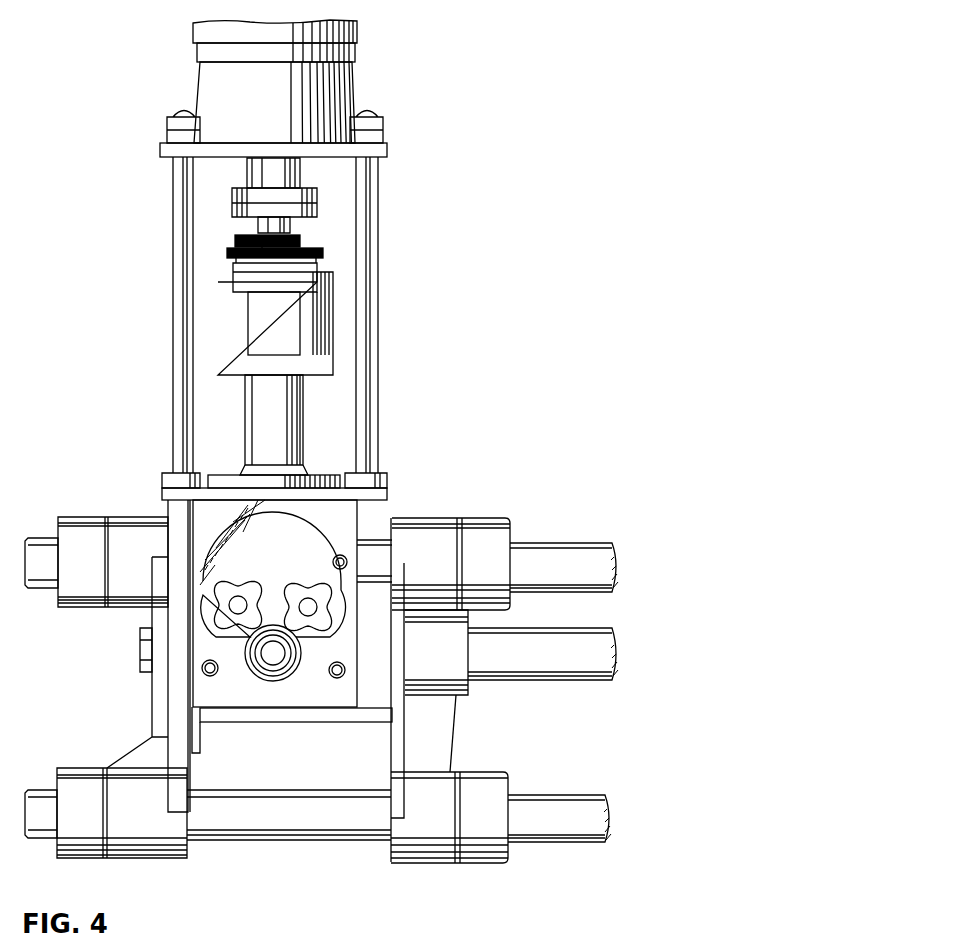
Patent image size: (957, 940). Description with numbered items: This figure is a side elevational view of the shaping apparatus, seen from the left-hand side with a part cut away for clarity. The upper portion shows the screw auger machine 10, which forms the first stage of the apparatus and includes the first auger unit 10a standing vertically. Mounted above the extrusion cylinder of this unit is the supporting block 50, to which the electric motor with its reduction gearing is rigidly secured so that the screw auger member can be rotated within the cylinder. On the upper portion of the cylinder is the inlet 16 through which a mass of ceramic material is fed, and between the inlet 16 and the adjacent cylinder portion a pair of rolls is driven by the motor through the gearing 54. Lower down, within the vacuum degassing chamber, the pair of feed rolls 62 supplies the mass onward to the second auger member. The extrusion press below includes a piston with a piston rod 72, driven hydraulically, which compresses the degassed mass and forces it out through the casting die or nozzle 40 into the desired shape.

The supporting block 50 is at (352, 75).
The gearing 54 is at (245, 240).
The inlet 16 is at (275, 319).
The screw auger machine 10 is at (235, 424).
The first auger unit 10a is at (303, 411).
The casting die or nozzle 40 is at (142, 652).
The feed rolls 62 is at (238, 624).
The piston rod 72 is at (532, 660).